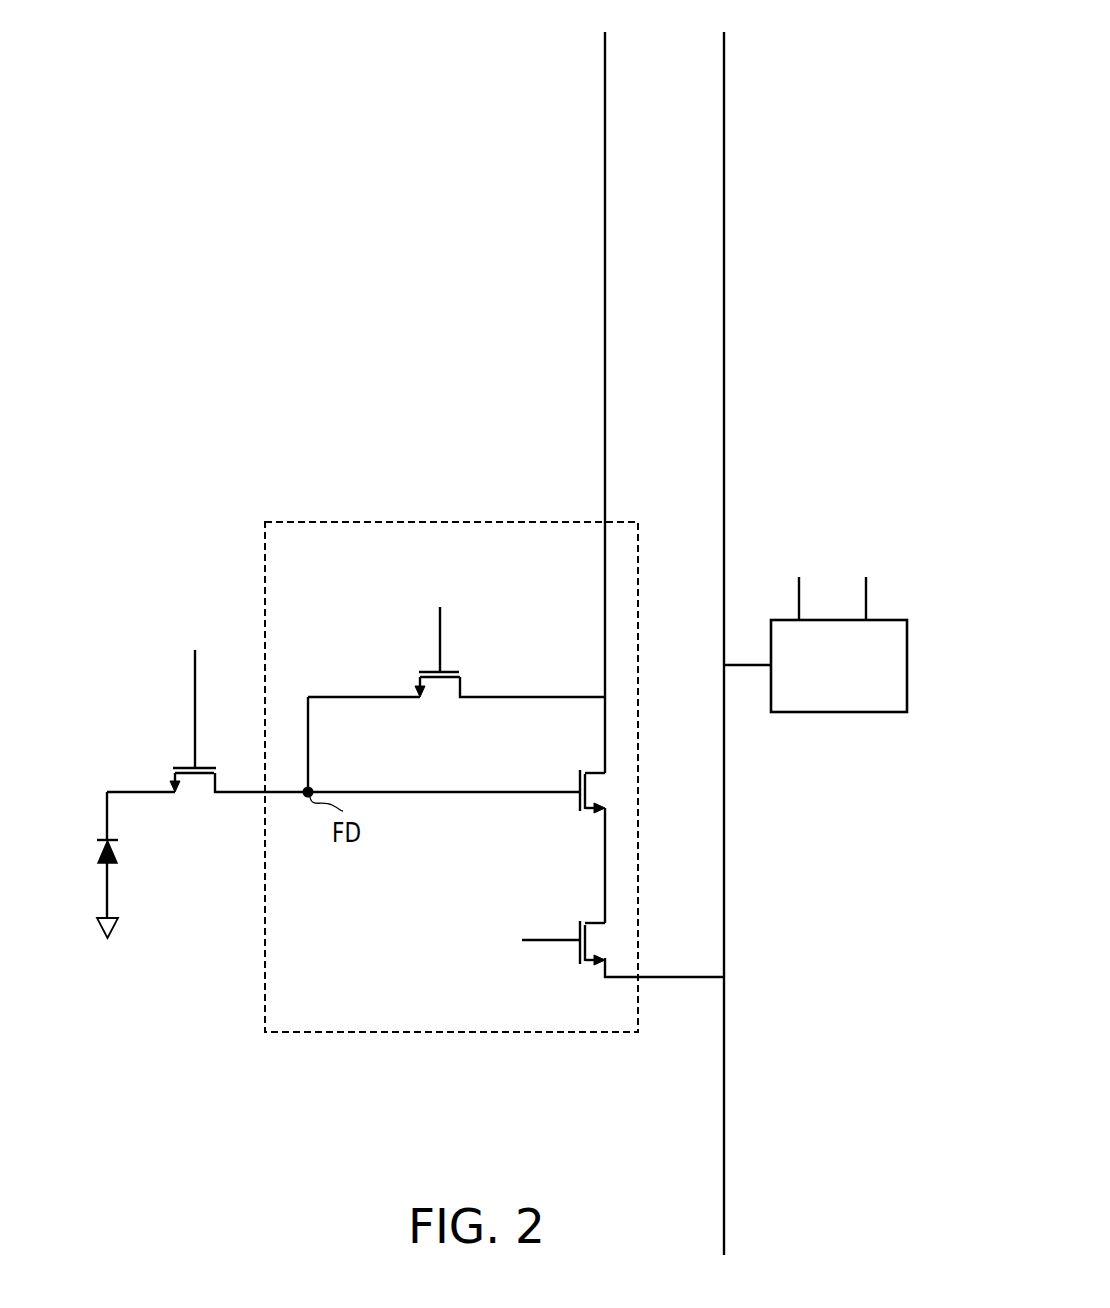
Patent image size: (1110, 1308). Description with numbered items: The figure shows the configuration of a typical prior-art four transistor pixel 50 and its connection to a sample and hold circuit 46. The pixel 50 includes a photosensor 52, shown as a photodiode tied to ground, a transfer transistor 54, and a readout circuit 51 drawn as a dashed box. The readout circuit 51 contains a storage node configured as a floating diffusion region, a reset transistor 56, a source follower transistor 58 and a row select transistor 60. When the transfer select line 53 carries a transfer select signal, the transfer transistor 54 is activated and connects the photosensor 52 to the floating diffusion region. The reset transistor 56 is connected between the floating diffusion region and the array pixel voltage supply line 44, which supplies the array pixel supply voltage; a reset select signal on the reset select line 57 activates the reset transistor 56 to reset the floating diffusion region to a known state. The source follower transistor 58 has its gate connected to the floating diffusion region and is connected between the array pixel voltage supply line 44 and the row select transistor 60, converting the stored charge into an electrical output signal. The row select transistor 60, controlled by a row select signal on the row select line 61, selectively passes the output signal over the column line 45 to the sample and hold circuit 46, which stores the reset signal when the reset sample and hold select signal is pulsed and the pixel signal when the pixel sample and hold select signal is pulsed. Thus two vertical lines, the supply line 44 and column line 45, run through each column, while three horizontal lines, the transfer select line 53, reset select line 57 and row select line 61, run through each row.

The array pixel voltage supply line 44 is at (605, 107).
The column line 45 is at (724, 107).
The sample and hold circuit 46 is at (849, 680).
The pixel 50 is at (161, 565).
The readout circuit 51 is at (383, 522).
The photosensor 52 is at (100, 840).
The transfer select line 53 is at (193, 680).
The transfer transistor 54 is at (175, 767).
The reset transistor 56 is at (425, 670).
The reset select line 57 is at (442, 647).
The source follower transistor 58 is at (602, 768).
The row select transistor 60 is at (593, 918).
The row select line 61 is at (540, 947).